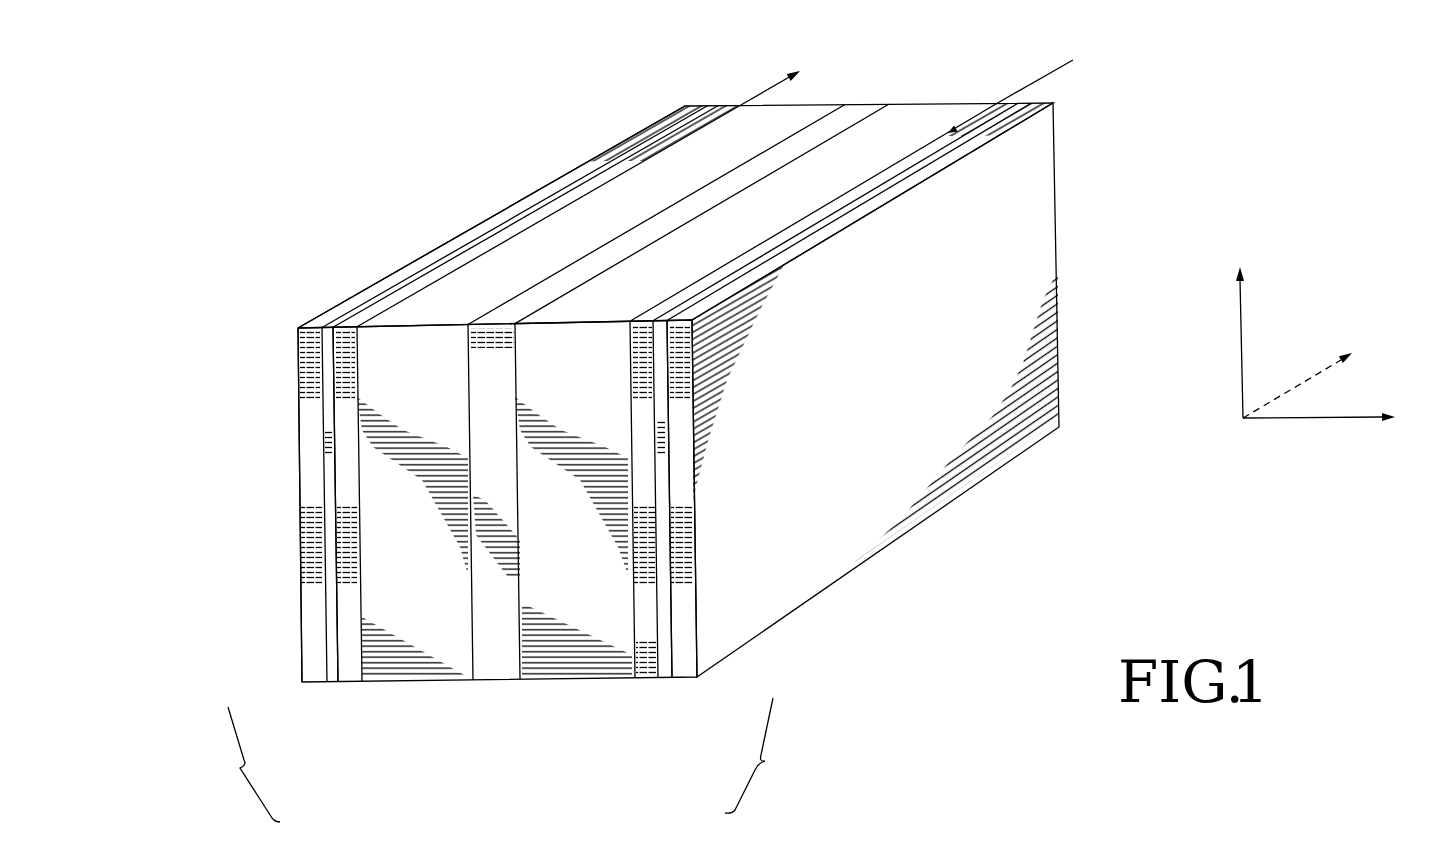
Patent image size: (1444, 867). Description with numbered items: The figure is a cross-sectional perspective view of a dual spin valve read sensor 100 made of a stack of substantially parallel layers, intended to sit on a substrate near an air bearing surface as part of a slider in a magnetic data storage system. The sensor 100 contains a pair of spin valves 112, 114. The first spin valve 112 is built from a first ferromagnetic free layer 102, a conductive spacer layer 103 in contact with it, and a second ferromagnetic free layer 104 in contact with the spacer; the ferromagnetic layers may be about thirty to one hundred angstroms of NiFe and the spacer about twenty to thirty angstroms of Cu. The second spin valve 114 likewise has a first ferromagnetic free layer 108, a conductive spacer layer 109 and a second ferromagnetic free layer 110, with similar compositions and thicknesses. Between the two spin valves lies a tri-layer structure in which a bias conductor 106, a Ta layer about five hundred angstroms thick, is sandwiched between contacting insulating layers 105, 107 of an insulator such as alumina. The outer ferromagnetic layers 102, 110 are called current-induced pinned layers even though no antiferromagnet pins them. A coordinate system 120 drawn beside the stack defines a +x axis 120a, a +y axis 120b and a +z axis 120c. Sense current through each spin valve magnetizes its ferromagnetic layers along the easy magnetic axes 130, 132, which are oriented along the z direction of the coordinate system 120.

The sensor 100 is at (545, 140).
The first ferromagnetic free layer 102 is at (313, 681).
The conductive spacer layer 103 is at (331, 681).
The second ferromagnetic free layer 104 is at (350, 678).
The insulating layer 105 is at (427, 677).
The bias conductor 106 is at (503, 675).
The insulating layer 107 is at (567, 675).
The first ferromagnetic free layer 108 is at (645, 673).
The conductive spacer layer 109 is at (670, 675).
The second ferromagnetic free layer 110 is at (685, 673).
The spin valve 112 is at (236, 764).
The second spin valve 114 is at (765, 755).
The coordinate system 120 is at (1299, 362).
The +x axis 120a is at (1320, 418).
The +y axis 120b is at (1240, 353).
The +z axis 120c is at (1297, 385).
The easy magnetic axis 130 is at (758, 92).
The easy magnetic axis 132 is at (1068, 75).